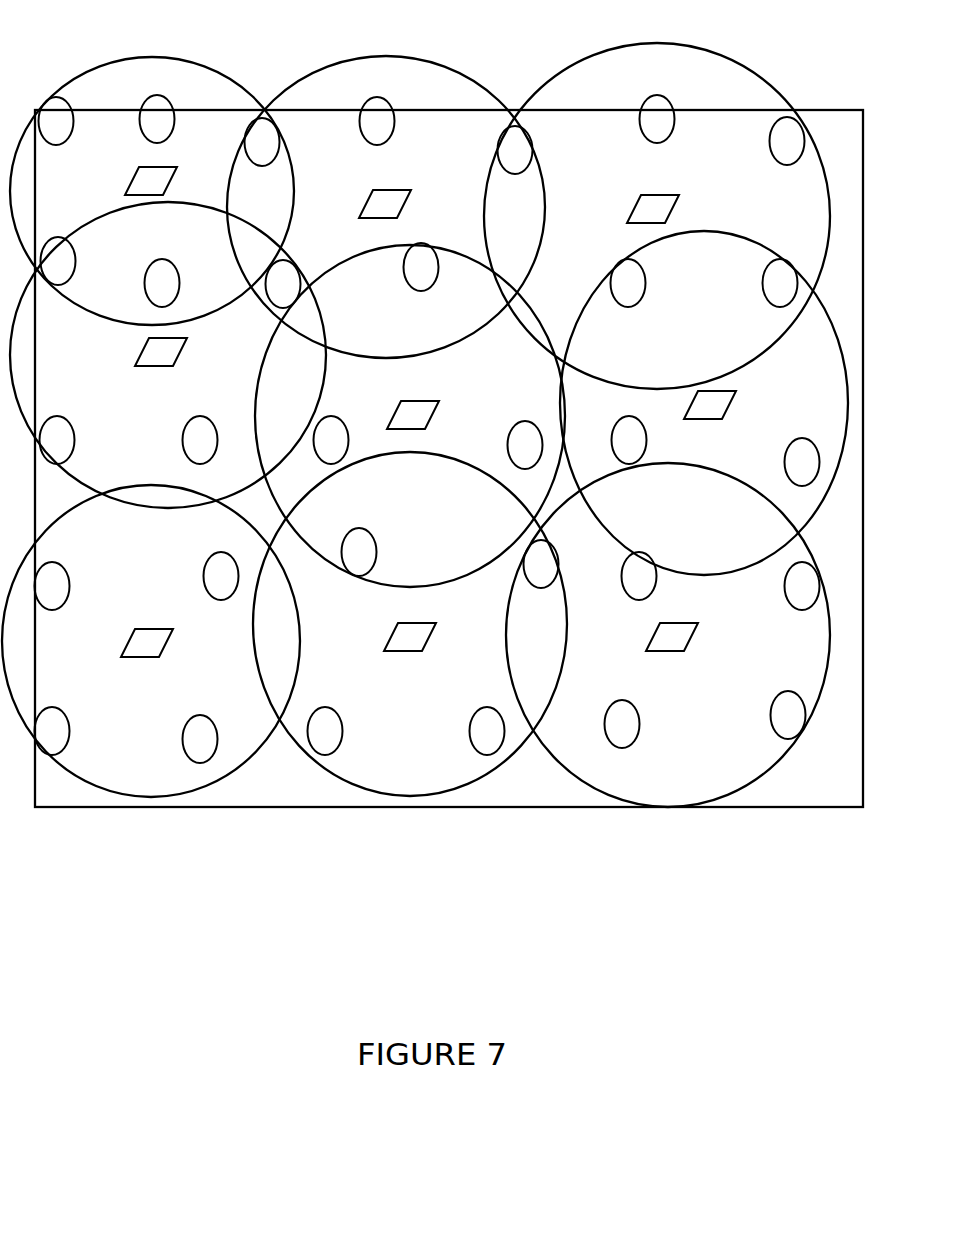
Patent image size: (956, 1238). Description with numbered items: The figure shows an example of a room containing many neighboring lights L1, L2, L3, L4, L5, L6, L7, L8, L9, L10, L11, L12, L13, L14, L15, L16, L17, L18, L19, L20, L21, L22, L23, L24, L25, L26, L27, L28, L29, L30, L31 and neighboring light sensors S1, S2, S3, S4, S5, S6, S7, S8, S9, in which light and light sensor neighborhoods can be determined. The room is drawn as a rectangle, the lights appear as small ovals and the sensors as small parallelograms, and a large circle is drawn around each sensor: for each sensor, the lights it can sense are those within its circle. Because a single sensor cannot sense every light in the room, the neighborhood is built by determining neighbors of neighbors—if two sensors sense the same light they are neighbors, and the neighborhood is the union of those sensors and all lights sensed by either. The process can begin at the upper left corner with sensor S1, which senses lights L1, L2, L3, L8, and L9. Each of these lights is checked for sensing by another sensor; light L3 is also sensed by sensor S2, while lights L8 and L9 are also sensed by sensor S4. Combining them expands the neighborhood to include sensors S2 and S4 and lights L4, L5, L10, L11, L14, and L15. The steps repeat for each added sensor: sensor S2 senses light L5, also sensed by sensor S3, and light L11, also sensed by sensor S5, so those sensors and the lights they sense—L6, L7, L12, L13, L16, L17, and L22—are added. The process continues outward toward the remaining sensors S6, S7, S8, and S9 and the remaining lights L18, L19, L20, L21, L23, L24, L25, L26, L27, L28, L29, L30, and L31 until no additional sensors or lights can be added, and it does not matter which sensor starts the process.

The light L1 is at (56, 121).
The light L2 is at (157, 119).
The light L3 is at (262, 142).
The light L4 is at (377, 121).
The light L5 is at (515, 150).
The light L6 is at (657, 119).
The light L7 is at (787, 141).
The light L8 is at (58, 261).
The light L9 is at (162, 283).
The light L10 is at (283, 284).
The light L11 is at (421, 267).
The light L12 is at (628, 283).
The light L13 is at (780, 283).
The light L14 is at (57, 440).
The light L15 is at (200, 440).
The light L16 is at (331, 440).
The light L17 is at (525, 445).
The light L18 is at (629, 440).
The light L19 is at (802, 462).
The light L20 is at (52, 586).
The light L21 is at (221, 576).
The light L22 is at (359, 552).
The light L23 is at (541, 564).
The light L24 is at (639, 576).
The light L25 is at (802, 586).
The light L26 is at (52, 731).
The light L27 is at (200, 739).
The light L28 is at (325, 731).
The light L29 is at (487, 731).
The light L30 is at (622, 724).
The light L31 is at (788, 715).
The light sensor S1 is at (151, 181).
The light sensor S2 is at (385, 204).
The light sensor S3 is at (653, 209).
The light sensor S4 is at (161, 352).
The light sensor S5 is at (413, 415).
The light sensor S6 is at (710, 405).
The light sensor S7 is at (147, 643).
The light sensor S8 is at (410, 637).
The light sensor S9 is at (672, 637).